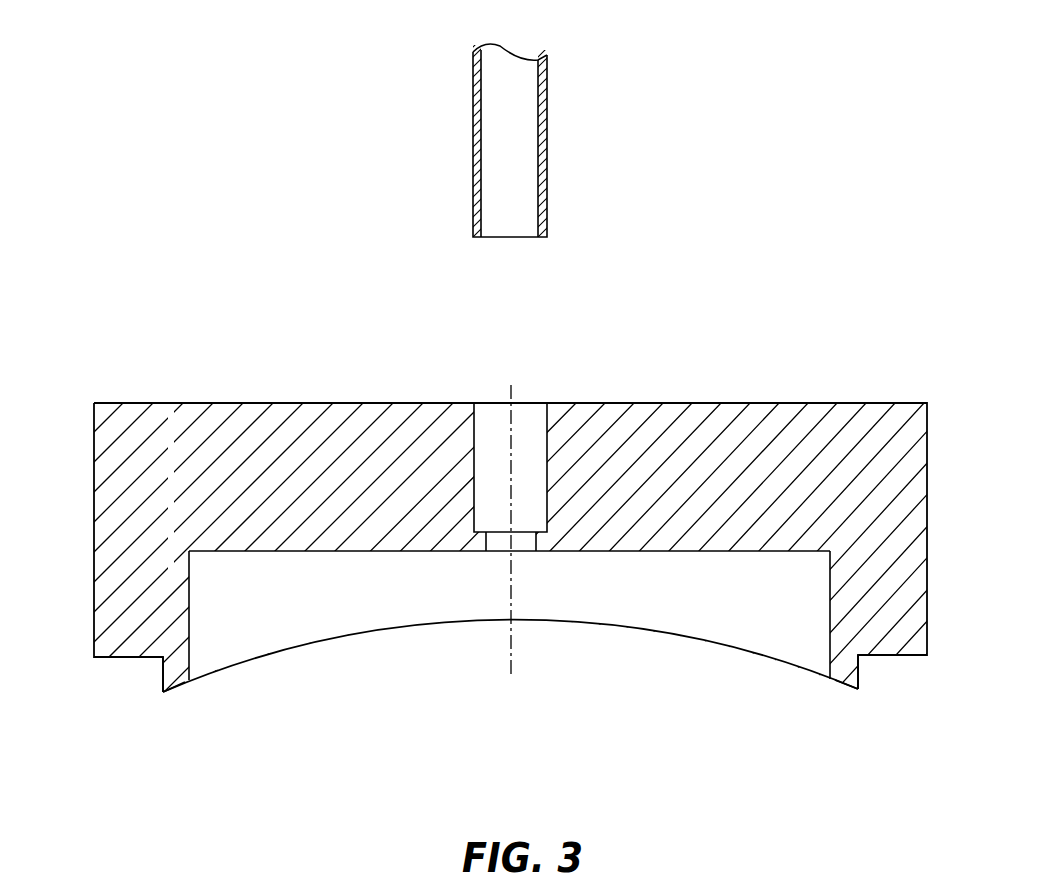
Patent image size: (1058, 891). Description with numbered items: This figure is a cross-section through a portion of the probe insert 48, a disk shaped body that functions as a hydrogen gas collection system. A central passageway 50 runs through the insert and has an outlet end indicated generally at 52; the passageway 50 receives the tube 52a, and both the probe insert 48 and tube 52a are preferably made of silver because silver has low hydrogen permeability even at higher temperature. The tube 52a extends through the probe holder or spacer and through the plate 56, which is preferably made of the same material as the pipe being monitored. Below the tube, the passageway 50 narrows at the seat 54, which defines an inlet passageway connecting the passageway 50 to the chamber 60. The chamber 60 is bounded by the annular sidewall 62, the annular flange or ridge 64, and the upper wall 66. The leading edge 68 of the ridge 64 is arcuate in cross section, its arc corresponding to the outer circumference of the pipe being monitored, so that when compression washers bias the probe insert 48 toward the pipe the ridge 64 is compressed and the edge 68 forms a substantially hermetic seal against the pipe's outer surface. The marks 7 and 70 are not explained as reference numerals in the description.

The probe insert 48 is at (707, 403).
The central passageway 50 is at (547, 415).
The outlet end 52 is at (480, 380).
The tube 52a is at (547, 158).
The seat 54 is at (540, 543).
The plate 56 is at (492, 540).
The annotation 7 is at (450, 670).
The chamber 60 is at (653, 605).
The annular sidewall 62 is at (190, 621).
The annular flange or ridge 64 is at (160, 676).
The upper wall 66 is at (327, 551).
The leading edge 68 is at (177, 697).
The bottom surface 70 is at (121, 660).